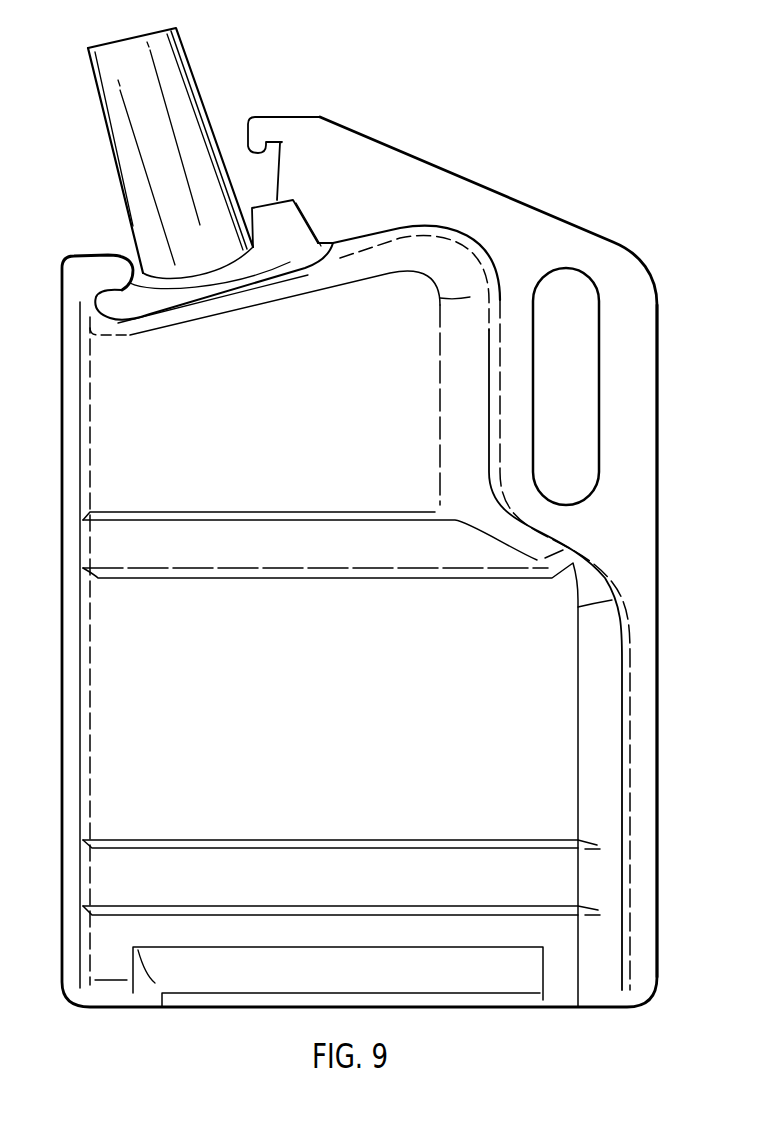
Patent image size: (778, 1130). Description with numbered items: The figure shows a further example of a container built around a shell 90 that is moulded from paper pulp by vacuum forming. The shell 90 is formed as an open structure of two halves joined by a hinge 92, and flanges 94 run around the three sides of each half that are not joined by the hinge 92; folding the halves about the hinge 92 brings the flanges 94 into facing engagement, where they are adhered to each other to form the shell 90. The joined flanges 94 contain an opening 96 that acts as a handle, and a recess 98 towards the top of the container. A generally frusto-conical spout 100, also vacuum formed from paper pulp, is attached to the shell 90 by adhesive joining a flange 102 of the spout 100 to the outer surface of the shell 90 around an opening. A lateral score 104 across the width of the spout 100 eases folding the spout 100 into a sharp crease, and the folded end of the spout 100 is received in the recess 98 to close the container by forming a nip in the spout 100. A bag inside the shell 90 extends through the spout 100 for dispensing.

The shell 90 is at (252, 932).
The hinge 92 is at (62, 870).
The flanges 94 is at (630, 445).
The opening 96 is at (588, 418).
The recess 98 is at (258, 117).
The spout 100 is at (177, 27).
The flange 102 is at (132, 305).
The lateral score 104 is at (215, 110).